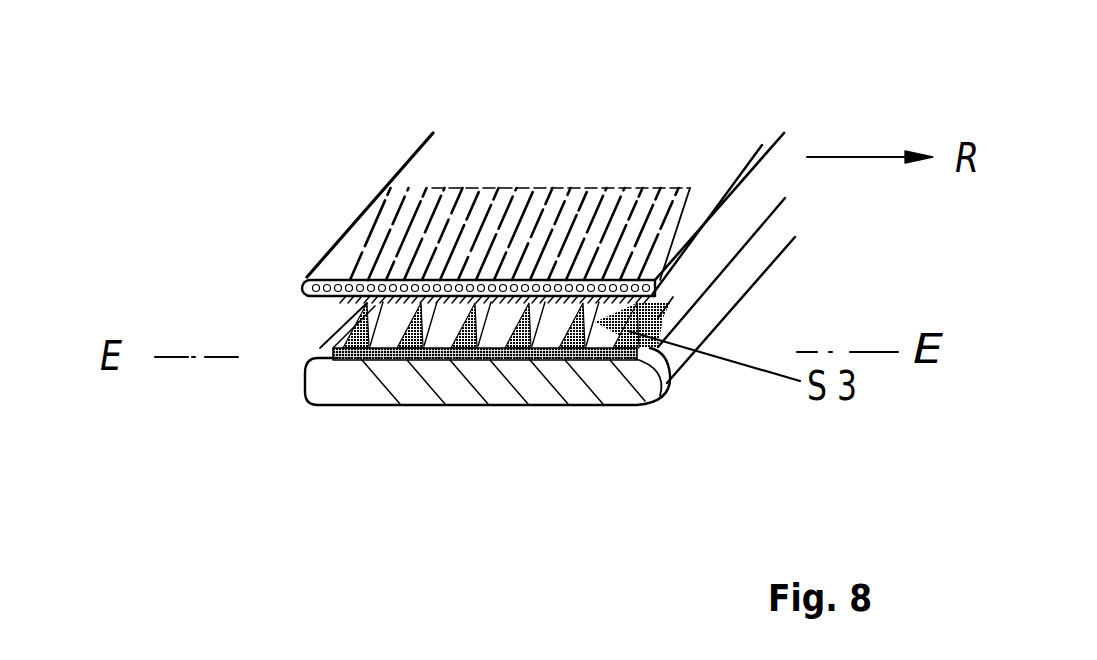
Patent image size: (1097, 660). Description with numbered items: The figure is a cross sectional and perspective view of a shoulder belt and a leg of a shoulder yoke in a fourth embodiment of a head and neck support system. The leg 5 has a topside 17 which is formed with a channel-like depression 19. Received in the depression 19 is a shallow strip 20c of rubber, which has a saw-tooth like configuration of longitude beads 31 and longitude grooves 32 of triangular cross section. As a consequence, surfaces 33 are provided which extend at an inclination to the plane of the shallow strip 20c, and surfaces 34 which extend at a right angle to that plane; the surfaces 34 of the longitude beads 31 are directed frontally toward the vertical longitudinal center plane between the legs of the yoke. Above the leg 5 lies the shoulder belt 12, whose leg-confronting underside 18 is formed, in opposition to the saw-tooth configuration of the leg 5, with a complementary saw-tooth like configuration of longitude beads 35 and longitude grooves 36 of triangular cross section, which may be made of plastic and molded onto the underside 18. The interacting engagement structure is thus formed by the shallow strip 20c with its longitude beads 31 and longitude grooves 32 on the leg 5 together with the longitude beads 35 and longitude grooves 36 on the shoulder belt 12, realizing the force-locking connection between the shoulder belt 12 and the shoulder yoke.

The shoulder belt 12 is at (374, 168).
The underside 18 is at (330, 296).
The longitude beads 35 is at (348, 358).
The surfaces 34 is at (452, 325).
The longitude grooves 36 is at (484, 410).
The longitude grooves 32 is at (549, 315).
The surfaces 33 is at (574, 322).
The longitude beads 31 is at (534, 380).
The leg 5 is at (378, 430).
The shallow strip 20c is at (431, 388).
The topside 17 is at (650, 340).
The depression 19 is at (660, 335).